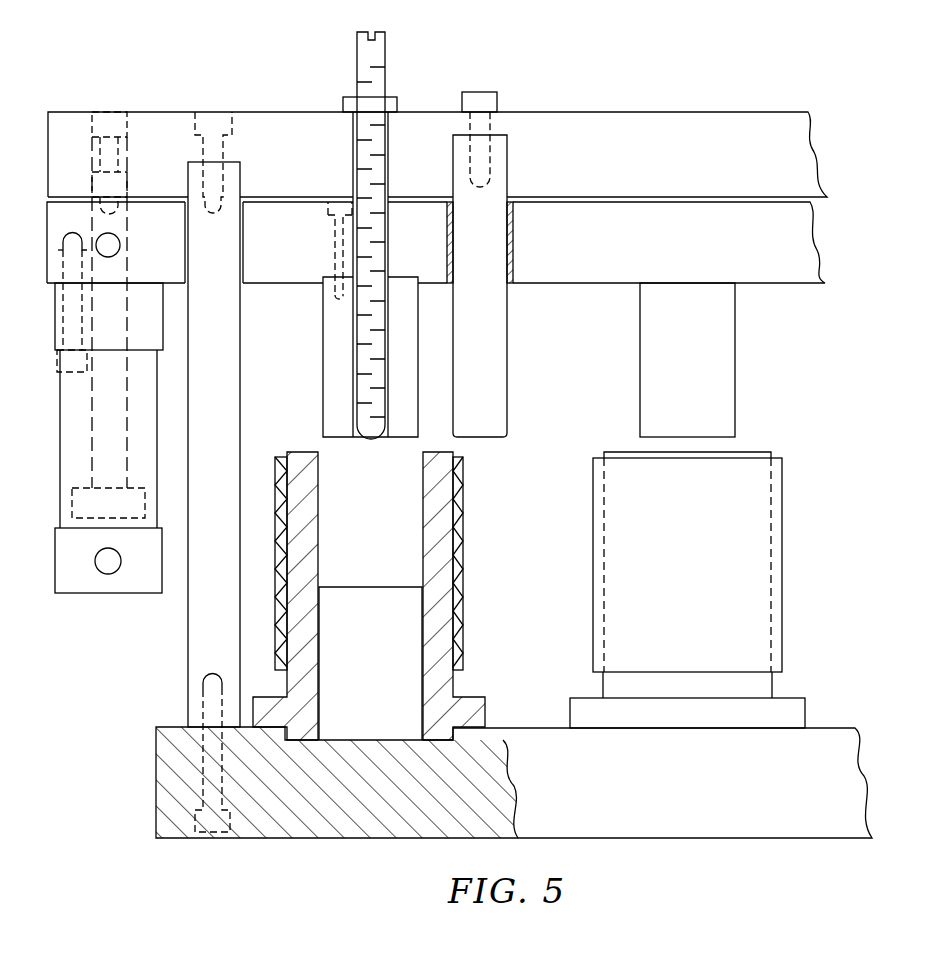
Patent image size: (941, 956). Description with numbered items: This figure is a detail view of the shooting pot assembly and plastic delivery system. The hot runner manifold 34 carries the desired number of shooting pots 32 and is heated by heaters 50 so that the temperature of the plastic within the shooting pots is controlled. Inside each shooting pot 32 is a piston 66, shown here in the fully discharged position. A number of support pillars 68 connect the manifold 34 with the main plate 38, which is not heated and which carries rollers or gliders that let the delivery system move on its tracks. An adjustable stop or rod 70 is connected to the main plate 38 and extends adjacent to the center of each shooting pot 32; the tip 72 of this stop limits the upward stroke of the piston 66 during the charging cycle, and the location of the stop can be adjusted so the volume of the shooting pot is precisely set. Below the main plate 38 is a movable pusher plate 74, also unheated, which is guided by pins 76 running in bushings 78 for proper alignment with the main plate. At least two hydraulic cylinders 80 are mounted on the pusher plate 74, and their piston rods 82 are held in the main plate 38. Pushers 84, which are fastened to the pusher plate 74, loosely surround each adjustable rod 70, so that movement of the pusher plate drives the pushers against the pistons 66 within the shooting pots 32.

The shooting pot 32 is at (443, 511).
The hot runner manifold 34 is at (842, 757).
The main plate 38 is at (301, 174).
The heater 50 is at (463, 568).
The piston 66 is at (383, 672).
The support pillar 68 is at (224, 386).
The adjustable stop or rod 70 is at (378, 133).
The tip 72 is at (388, 433).
The pusher plate 74 is at (643, 271).
The pin 76 is at (500, 174).
The bushing 78 is at (510, 253).
The hydraulic cylinder 80 is at (78, 427).
The piston rod 82 is at (98, 222).
The pusher 84 is at (338, 323).